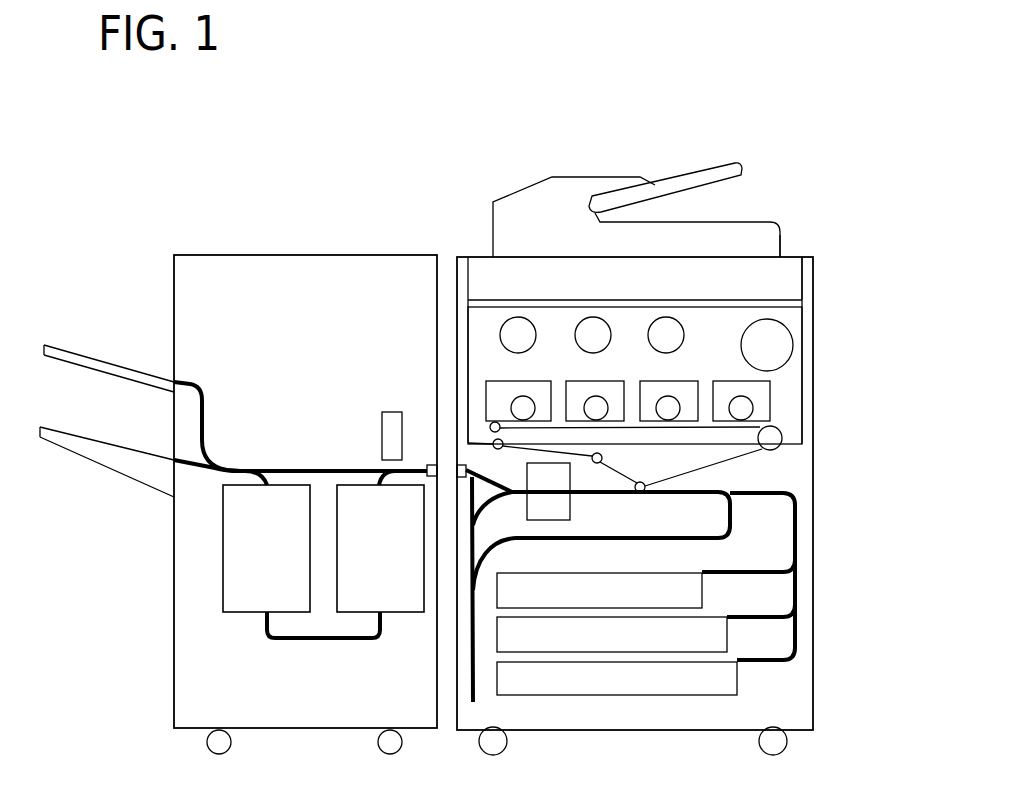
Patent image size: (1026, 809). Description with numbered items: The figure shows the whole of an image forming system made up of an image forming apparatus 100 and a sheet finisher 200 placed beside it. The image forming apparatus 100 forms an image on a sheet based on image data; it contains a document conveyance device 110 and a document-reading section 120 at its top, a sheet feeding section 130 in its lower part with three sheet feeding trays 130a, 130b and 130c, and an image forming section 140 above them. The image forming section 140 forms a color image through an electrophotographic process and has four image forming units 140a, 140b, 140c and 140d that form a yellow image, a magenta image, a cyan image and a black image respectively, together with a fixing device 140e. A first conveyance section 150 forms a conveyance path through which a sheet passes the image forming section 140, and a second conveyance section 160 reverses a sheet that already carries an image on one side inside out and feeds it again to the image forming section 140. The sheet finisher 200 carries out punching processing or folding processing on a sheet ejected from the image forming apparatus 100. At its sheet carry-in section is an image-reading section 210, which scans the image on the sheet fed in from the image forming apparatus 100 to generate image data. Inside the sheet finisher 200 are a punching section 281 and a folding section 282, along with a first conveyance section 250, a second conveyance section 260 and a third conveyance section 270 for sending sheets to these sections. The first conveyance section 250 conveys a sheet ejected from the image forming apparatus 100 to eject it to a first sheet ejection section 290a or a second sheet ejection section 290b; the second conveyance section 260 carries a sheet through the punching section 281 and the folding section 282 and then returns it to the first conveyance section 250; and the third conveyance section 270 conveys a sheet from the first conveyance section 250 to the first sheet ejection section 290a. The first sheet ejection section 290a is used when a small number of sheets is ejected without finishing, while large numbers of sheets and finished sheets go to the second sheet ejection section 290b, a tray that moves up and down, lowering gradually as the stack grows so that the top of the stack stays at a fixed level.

The image forming apparatus 100 is at (576, 155).
The document conveyance device 110 is at (692, 167).
The document-reading section 120 is at (786, 268).
The sheet feeding section 130 is at (797, 515).
The sheet feeding tray 130a is at (662, 583).
The sheet feeding tray 130b is at (697, 630).
The sheet feeding tray 130c is at (673, 688).
The image forming section 140 is at (793, 320).
The image forming unit 140a is at (510, 381).
The image forming unit 140b is at (590, 381).
The image forming unit 140c is at (664, 381).
The image forming unit 140d is at (772, 400).
The fixing device 140e is at (555, 452).
The first conveyance section 150 is at (615, 494).
The second conveyance section 160 is at (538, 542).
The sheet finisher 200 is at (291, 226).
The image-reading section 210 is at (393, 412).
The first conveyance section 250 is at (313, 469).
The second conveyance section 260 is at (322, 642).
The third conveyance section 270 is at (206, 403).
The punching section 281 is at (408, 600).
The folding section 282 is at (240, 600).
The first sheet ejection section 290a is at (104, 358).
The second sheet ejection section 290b is at (103, 457).